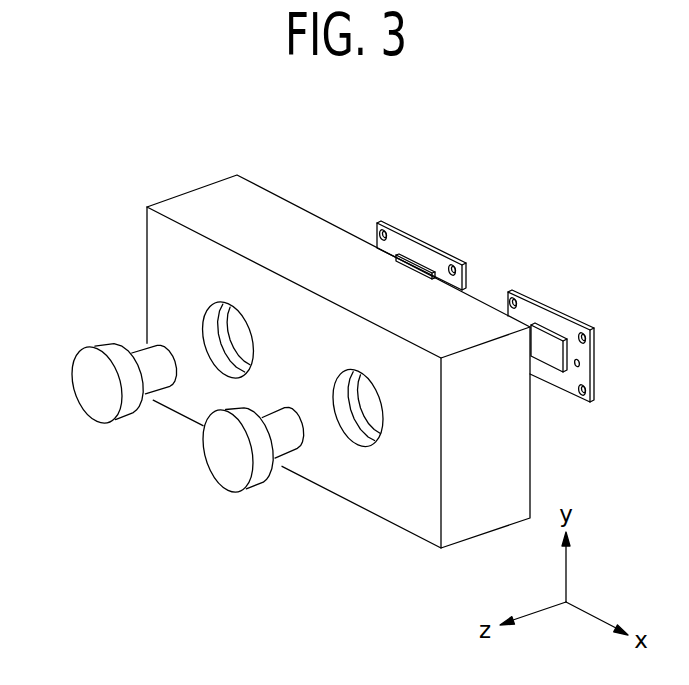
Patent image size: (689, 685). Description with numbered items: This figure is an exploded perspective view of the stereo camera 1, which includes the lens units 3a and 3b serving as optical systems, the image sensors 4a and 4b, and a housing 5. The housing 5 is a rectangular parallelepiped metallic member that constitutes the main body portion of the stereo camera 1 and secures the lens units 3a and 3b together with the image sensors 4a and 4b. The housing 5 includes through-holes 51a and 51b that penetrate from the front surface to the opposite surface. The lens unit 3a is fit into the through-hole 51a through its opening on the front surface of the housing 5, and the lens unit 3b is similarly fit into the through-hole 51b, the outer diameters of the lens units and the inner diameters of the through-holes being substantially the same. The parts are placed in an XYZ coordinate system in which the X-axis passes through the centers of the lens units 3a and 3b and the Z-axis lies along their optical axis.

The stereo camera 1 is at (504, 194).
The housing 5 is at (221, 192).
The lens unit 3a is at (230, 466).
The lens unit 3b is at (98, 403).
The through-hole 51a is at (370, 405).
The through-hole 51b is at (240, 340).
The image sensor 4a is at (550, 306).
The image sensor 4b is at (420, 233).